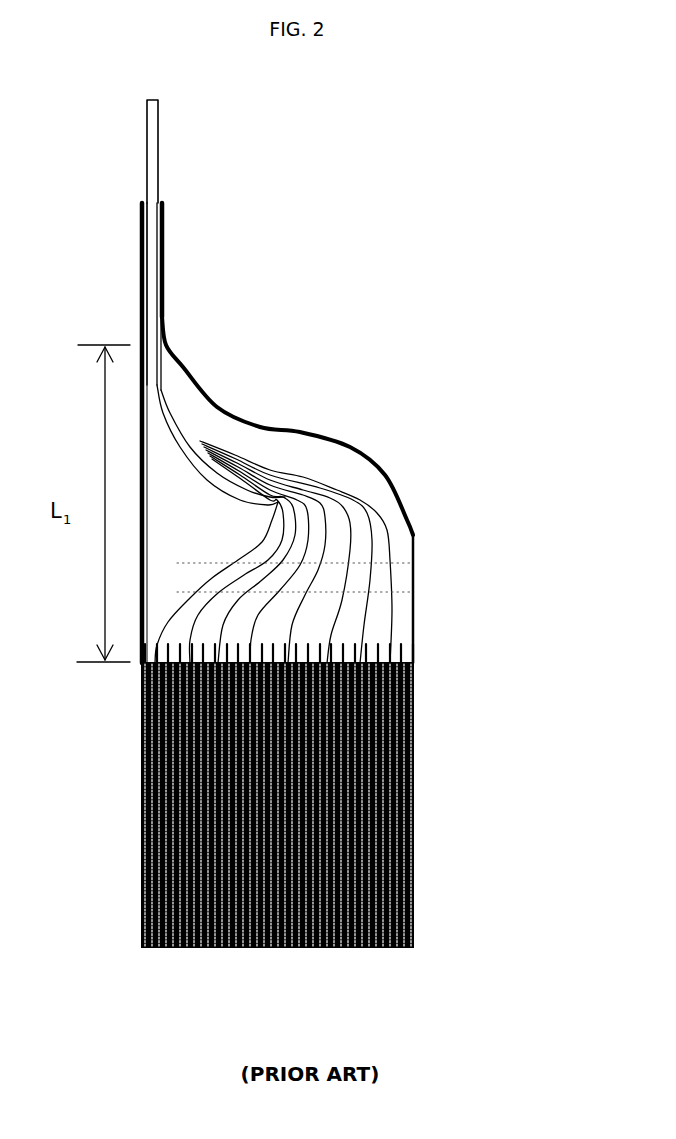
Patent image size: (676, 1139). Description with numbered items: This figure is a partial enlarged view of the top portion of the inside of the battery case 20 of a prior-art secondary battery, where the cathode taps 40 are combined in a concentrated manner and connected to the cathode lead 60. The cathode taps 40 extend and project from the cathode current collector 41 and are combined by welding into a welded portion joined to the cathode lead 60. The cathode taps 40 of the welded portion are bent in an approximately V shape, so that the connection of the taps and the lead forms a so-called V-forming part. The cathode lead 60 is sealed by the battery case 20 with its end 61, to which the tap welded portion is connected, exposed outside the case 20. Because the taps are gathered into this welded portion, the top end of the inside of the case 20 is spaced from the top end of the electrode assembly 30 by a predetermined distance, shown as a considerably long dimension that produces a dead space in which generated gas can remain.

The battery case 20 is at (317, 433).
The electrode assembly 30 is at (413, 951).
The cathode taps 40 is at (402, 573).
The cathode current collector 41 is at (147, 713).
The cathode lead 60 is at (157, 352).
The end of the cathode lead 61 is at (160, 160).